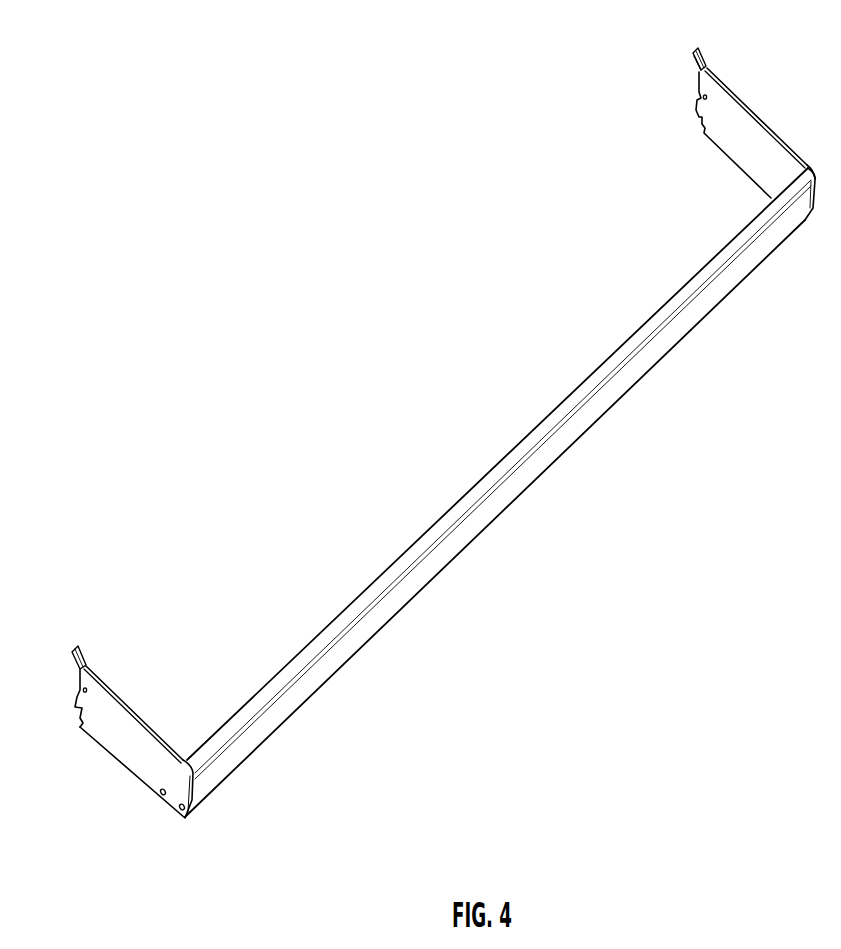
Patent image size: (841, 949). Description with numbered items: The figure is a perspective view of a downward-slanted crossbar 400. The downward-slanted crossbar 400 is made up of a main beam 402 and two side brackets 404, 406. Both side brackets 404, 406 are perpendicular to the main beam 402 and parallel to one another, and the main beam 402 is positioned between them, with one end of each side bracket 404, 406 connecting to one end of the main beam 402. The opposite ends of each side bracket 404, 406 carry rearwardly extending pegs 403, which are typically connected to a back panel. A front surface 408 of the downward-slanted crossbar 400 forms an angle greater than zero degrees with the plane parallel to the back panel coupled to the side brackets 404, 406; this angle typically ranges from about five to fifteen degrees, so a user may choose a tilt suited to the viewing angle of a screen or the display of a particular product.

The downward-slanted crossbar 400 is at (208, 170).
The main beam 402 is at (482, 472).
The rearwardly extending pegs 403 is at (691, 58).
The side bracket 404 is at (127, 704).
The side bracket 406 is at (750, 104).
The front surface 408 is at (405, 593).